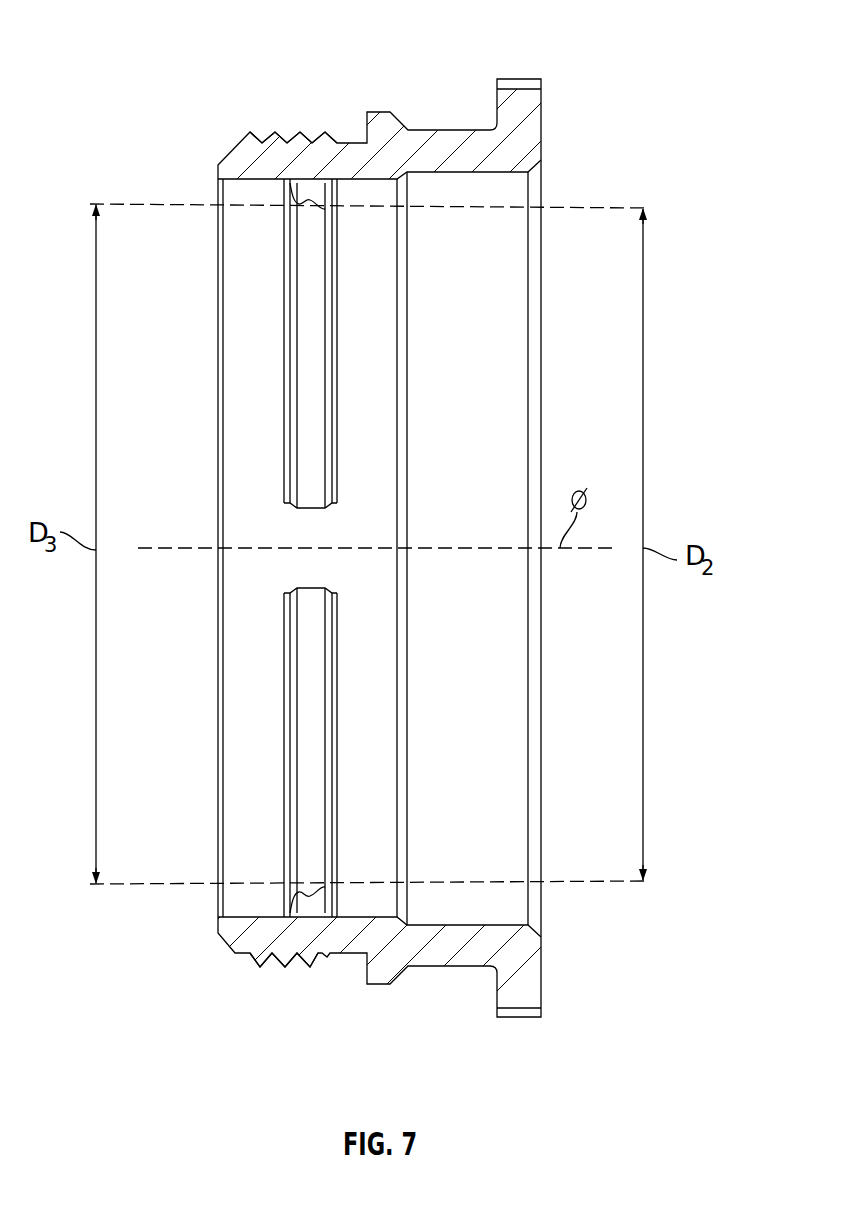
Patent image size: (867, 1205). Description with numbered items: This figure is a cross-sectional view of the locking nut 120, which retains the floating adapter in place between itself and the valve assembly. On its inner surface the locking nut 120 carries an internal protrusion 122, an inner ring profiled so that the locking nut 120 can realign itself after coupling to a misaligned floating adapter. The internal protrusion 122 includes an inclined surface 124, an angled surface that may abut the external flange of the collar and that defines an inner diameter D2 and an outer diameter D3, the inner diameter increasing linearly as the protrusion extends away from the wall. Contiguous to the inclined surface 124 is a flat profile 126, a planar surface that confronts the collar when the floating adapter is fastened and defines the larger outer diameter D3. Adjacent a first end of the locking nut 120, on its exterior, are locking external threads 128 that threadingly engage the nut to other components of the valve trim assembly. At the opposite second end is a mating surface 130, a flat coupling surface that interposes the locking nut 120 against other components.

The locking nut 120 is at (131, 43).
The internal protrusion 122 is at (276, 308).
The inclined surface 124 is at (312, 885).
The flat profile 126 is at (288, 904).
The locking external threads 128 is at (300, 130).
The mating surface 130 is at (541, 970).